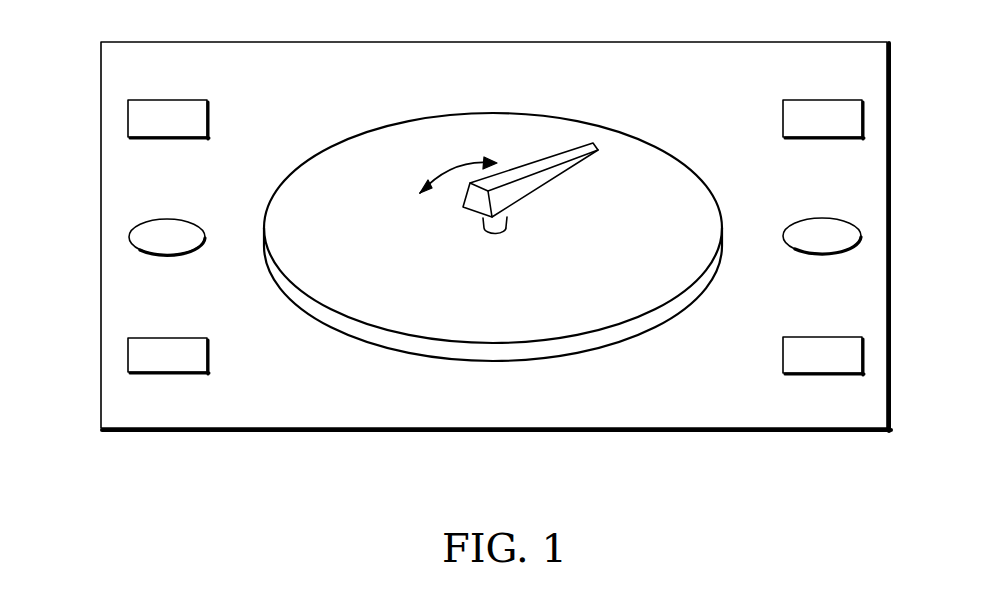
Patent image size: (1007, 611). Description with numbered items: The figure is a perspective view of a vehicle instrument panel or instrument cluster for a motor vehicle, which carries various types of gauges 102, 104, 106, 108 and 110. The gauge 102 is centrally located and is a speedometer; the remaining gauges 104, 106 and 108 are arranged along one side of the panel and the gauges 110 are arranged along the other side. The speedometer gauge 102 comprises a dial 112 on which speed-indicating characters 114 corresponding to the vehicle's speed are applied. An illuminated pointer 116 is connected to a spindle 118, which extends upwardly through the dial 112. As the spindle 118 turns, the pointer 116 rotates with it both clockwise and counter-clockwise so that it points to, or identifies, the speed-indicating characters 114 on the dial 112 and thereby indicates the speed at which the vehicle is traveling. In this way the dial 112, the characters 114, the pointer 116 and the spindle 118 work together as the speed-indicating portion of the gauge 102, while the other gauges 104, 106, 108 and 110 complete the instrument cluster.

The gauge 102 is at (272, 200).
The gauge 104 is at (127, 355).
The gauge 106 is at (128, 237).
The gauge 108 is at (127, 117).
The gauge 110 is at (783, 117).
The dial 112 is at (493, 228).
The speed-indicating characters 114 is at (728, 158).
The illuminated pointer 116 is at (540, 188).
The spindle 118 is at (481, 223).